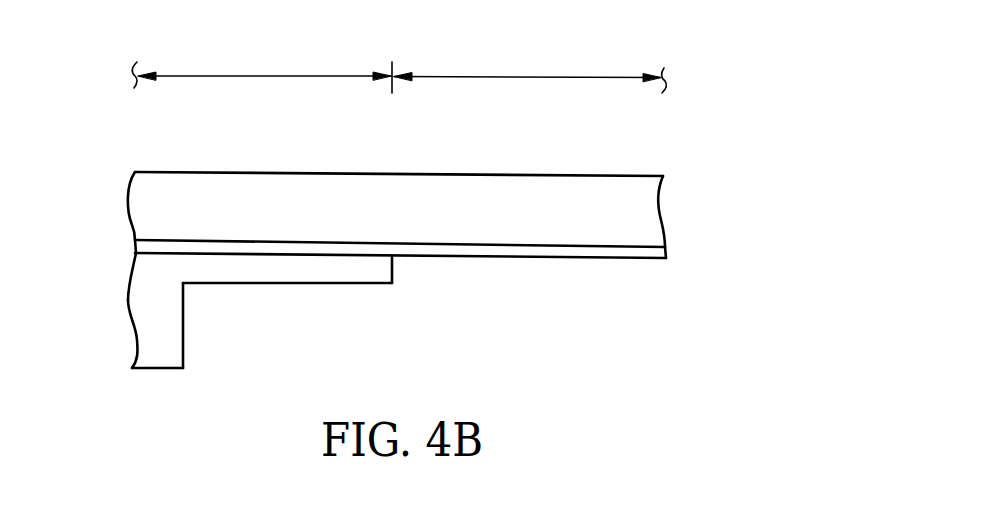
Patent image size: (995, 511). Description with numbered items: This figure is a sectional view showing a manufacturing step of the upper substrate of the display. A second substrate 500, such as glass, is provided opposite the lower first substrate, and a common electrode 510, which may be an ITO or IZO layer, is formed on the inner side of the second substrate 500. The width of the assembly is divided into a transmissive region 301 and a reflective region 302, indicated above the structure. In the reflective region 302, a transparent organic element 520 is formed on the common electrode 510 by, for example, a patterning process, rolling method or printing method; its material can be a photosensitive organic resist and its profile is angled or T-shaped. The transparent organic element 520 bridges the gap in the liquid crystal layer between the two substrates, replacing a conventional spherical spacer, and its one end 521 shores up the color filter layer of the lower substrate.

The transmissive region 301 is at (530, 66).
The reflective region 302 is at (262, 65).
The second substrate 500 is at (633, 216).
The common electrode 510 is at (632, 250).
The transparent organic element 520 is at (162, 283).
The end of the transparent organic element 521 is at (156, 368).